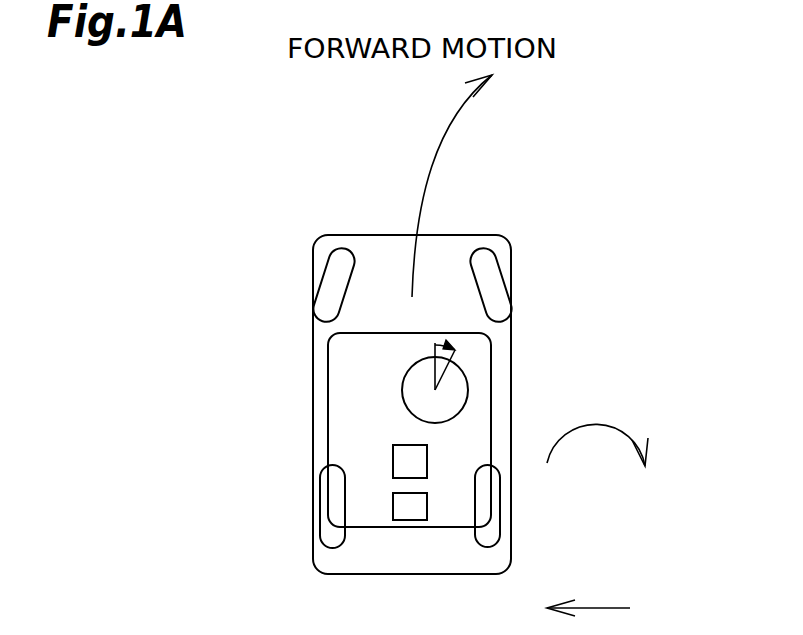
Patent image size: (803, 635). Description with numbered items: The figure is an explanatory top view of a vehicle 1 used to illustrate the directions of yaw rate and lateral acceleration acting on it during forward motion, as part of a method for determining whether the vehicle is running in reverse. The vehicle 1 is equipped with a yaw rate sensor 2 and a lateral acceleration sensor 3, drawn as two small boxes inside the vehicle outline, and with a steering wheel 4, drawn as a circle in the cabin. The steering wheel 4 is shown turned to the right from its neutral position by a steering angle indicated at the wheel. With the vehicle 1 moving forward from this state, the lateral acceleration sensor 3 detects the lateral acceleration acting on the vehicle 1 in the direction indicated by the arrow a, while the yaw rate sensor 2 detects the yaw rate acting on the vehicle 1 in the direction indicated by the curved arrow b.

The vehicle 1 is at (312, 261).
The yaw rate sensor 2 is at (393, 462).
The lateral acceleration sensor 3 is at (393, 508).
The steering wheel 4 is at (402, 390).
The arrow a is at (602, 608).
The arrow b is at (618, 417).